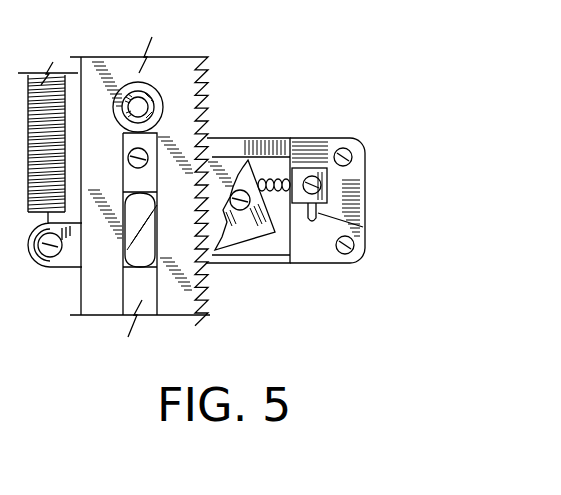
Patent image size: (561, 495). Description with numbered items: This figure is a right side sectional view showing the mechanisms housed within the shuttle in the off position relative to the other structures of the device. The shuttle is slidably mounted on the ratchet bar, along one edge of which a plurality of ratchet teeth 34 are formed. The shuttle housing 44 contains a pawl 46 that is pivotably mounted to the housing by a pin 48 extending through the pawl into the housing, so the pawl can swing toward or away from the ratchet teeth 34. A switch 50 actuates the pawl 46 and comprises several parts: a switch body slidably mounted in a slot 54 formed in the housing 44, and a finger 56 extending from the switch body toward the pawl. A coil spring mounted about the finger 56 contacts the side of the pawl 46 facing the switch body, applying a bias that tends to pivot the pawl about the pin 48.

The ratchet teeth 34 is at (244, 308).
The shuttle housing 44 is at (258, 138).
The pawl 46 is at (248, 160).
The pin 48 is at (248, 160).
The switch 50 is at (362, 187).
The slot 54 is at (365, 232).
The finger 56 is at (282, 180).